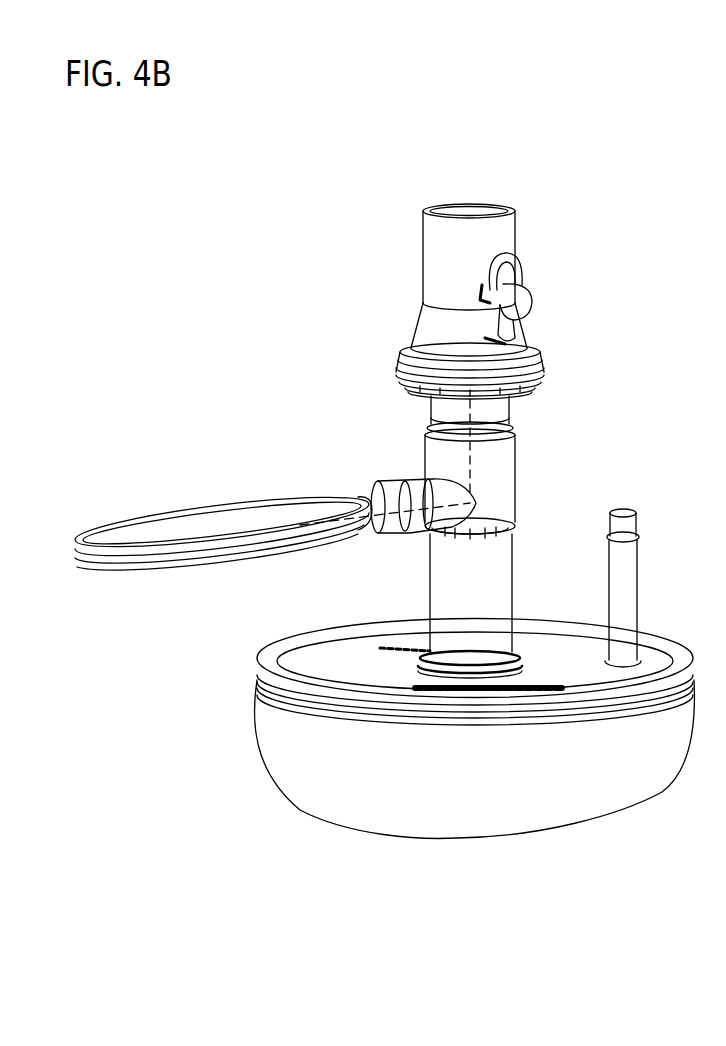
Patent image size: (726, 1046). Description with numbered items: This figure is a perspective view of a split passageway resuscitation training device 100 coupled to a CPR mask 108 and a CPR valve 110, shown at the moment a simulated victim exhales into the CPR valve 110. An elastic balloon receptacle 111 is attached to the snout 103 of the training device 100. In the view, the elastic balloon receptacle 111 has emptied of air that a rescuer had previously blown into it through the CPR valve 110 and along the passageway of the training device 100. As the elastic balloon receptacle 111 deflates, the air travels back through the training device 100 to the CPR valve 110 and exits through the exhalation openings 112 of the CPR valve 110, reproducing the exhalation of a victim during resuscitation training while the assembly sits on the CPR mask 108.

The split passageway resuscitation training device 100 is at (523, 477).
The snout 103 is at (427, 477).
The CPR mask 108 is at (432, 792).
The CPR valve 110 is at (532, 252).
The elastic balloon receptacle 111 is at (207, 528).
The exhalation openings 112 is at (530, 392).